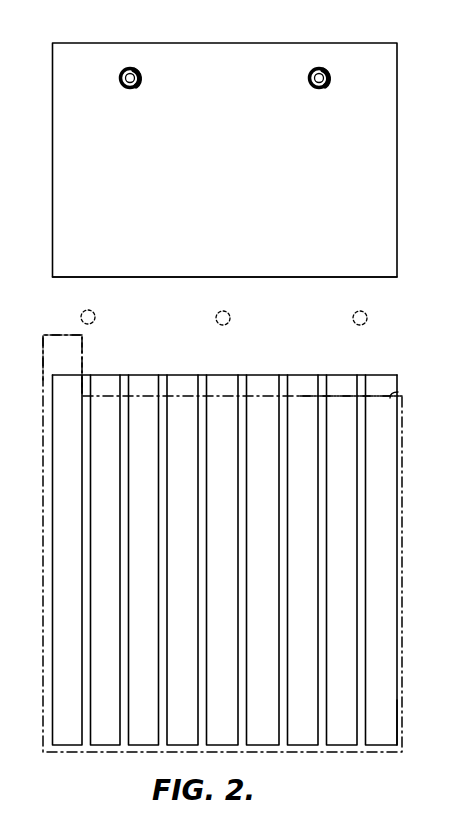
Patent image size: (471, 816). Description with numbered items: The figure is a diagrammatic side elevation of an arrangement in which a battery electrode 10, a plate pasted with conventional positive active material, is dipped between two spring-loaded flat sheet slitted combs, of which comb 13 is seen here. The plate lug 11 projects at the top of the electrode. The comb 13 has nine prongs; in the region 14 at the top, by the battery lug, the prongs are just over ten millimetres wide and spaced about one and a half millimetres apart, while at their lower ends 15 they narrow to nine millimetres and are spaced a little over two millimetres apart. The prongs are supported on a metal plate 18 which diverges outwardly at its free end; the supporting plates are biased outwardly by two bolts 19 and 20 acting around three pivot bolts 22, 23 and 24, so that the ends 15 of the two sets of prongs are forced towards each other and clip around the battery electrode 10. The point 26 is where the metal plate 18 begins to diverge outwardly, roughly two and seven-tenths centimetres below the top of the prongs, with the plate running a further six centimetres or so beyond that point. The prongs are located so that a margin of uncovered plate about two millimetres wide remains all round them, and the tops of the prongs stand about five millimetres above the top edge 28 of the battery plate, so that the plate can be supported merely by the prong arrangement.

The battery electrode 10 is at (116, 752).
The plate lug 11 is at (47, 353).
The comb 13 is at (382, 615).
The region 14 is at (63, 450).
The lower ends of the prongs 15 is at (395, 718).
The metal plate 18 is at (87, 187).
The bolt 19 is at (318, 89).
The bolt 20 is at (130, 89).
The pivot bolt 22 is at (353, 315).
The pivot bolt 23 is at (223, 311).
The pivot bolt 24 is at (96, 313).
The point at which the plates diverge 26 is at (293, 277).
The top edge of the plate 28 is at (408, 400).